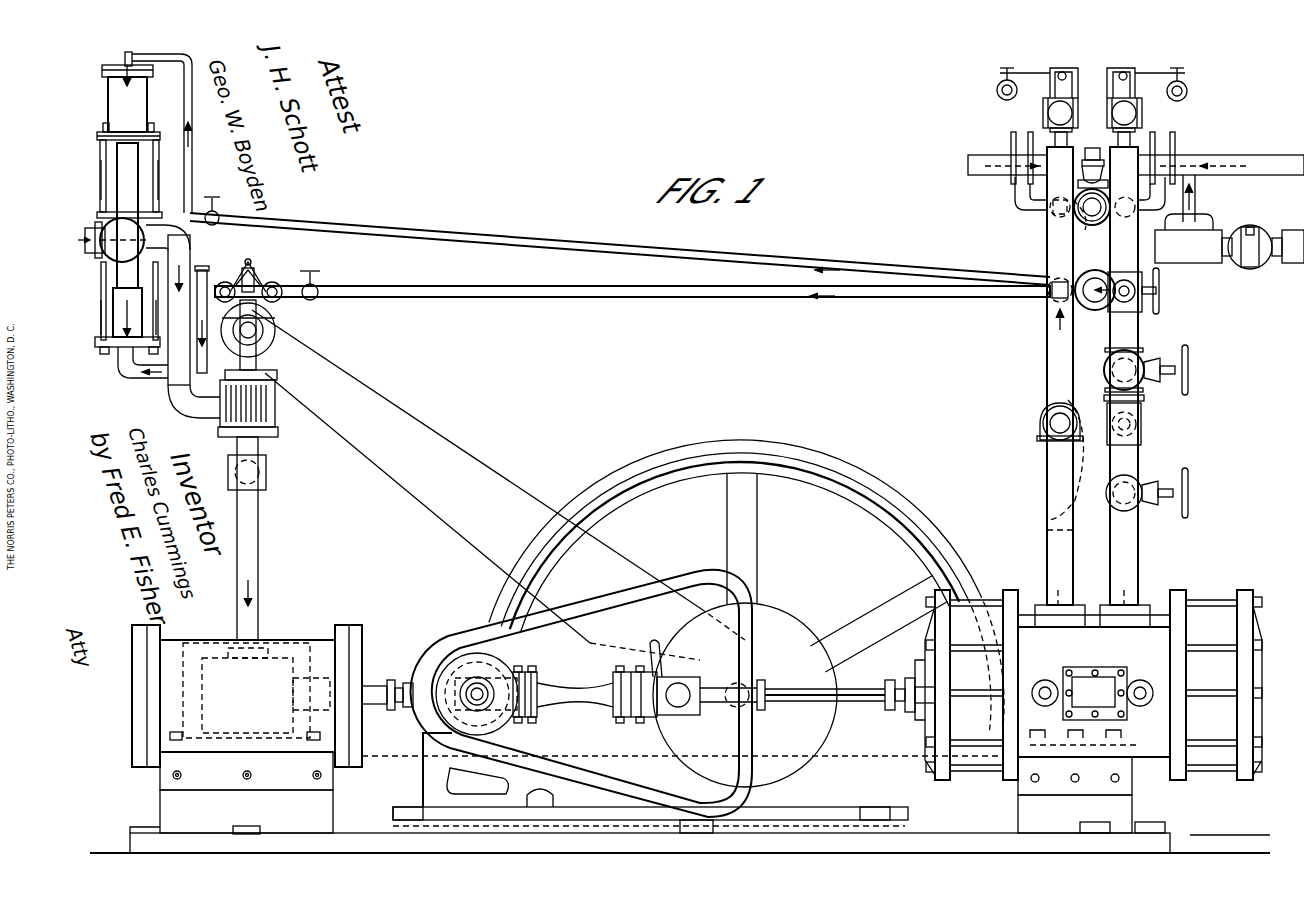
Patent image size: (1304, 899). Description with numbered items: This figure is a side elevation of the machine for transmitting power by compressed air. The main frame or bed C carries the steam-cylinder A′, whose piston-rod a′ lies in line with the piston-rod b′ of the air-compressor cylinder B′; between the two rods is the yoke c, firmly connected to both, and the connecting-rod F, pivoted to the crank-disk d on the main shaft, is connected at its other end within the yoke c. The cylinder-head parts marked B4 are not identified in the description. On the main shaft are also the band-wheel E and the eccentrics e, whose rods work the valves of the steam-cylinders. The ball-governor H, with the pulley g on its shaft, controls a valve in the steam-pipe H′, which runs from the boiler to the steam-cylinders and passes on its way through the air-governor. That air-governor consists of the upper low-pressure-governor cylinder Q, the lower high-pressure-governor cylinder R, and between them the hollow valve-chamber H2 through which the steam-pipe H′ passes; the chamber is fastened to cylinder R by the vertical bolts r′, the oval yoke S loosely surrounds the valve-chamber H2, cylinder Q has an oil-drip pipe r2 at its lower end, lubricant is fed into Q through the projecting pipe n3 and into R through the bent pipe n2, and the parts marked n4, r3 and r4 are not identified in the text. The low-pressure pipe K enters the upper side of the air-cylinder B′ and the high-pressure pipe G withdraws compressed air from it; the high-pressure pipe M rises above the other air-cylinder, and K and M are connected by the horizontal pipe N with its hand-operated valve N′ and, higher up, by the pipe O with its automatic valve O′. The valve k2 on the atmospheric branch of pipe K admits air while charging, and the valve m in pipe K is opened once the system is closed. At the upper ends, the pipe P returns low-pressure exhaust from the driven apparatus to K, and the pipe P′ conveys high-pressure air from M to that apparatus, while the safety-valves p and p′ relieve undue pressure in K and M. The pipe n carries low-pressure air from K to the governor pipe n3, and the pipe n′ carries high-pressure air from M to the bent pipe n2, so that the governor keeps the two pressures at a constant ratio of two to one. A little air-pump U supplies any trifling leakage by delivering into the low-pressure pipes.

The steam-cylinder A′ is at (228, 724).
The piston-rod a′ is at (396, 708).
The air-cylinder B′ is at (1118, 657).
The air cylinder heads B4 is at (952, 675).
The piston-rod b′ is at (842, 703).
The main frame C is at (681, 783).
The yoke c is at (492, 642).
The crank-disk d is at (745, 695).
The band-wheel E is at (775, 436).
The eccentric e is at (498, 485).
The connecting-rod F is at (590, 733).
The air-eduction pipe G is at (1058, 540).
The ball-governor H is at (258, 278).
The steam-pipe H′ is at (186, 270).
The valve-chamber H2 is at (142, 234).
The pulley g is at (272, 330).
The low-pressure pipe K is at (1135, 255).
The valve k2 is at (1208, 505).
The high-pressure pipe M is at (1053, 240).
The valve m is at (1160, 374).
The horizontal pipe N is at (1090, 308).
The valve N′ is at (1152, 316).
The low-pressure pipe n is at (620, 241).
The high-pressure pipe n′ is at (515, 300).
The bent pipe n2 is at (140, 380).
The projecting pipe n3 is at (150, 61).
The piston rod of Q n4 is at (123, 60).
The horizontal pipe O is at (1058, 232).
The automatic valve O′ is at (1092, 199).
The pipe P is at (1253, 170).
The pipe P′ is at (968, 172).
The safety-valve p is at (1190, 82).
The safety-valve p′ is at (990, 82).
The low-pressure-governor cylinder Q is at (128, 102).
The high-pressure-governor cylinder R is at (127, 308).
The vertical bolts r′ is at (157, 308).
The oil-drip pipe r2 is at (100, 163).
The rod r3 is at (153, 164).
The rod r4 is at (101, 308).
The yoke S is at (129, 214).
The air-pump U is at (1272, 217).